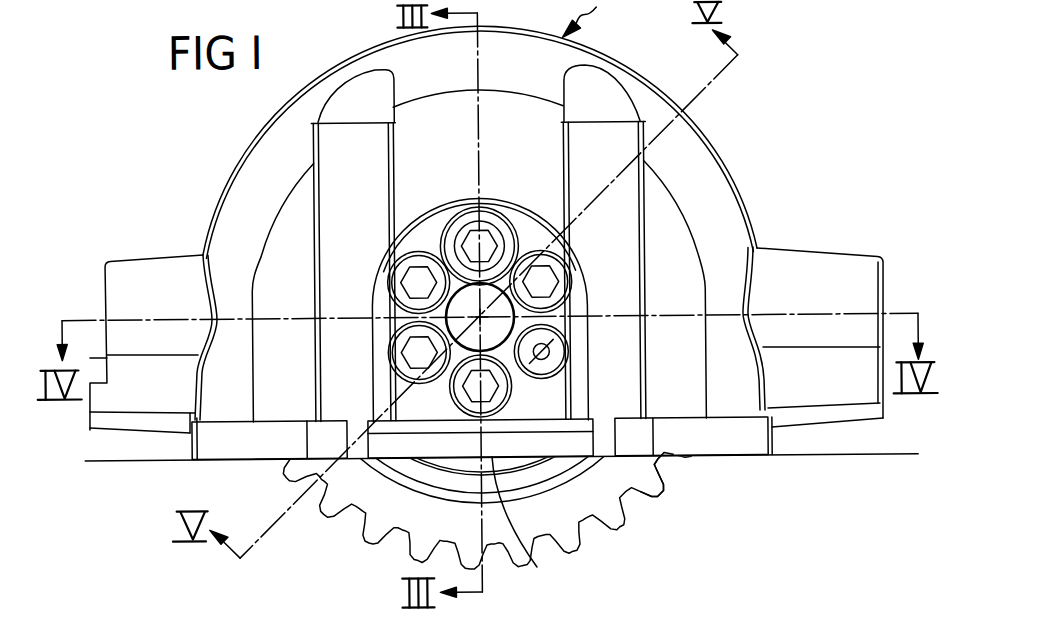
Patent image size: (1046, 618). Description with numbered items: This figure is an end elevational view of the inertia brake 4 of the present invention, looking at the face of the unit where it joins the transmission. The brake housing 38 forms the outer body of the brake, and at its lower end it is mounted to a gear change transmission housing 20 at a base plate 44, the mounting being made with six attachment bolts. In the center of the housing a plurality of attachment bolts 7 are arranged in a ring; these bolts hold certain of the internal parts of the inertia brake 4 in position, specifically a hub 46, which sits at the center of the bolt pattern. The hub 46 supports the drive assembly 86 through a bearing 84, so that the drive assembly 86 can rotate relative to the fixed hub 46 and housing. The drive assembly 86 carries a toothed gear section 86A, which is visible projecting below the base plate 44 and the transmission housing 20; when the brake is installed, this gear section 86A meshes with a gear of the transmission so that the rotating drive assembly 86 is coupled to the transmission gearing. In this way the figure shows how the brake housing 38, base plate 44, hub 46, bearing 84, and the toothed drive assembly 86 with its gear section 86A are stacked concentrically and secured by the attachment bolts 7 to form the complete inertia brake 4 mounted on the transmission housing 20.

The inertia brake 4 is at (478, 211).
The attachment bolts 7 is at (418, 274).
The gear change transmission housing 20 is at (813, 487).
The brake housing 38 is at (295, 133).
The base plate 44 is at (254, 440).
The hub 46 is at (535, 523).
The bearing 84 is at (542, 472).
The drive assembly 86 is at (378, 501).
The gear section 86A is at (659, 485).